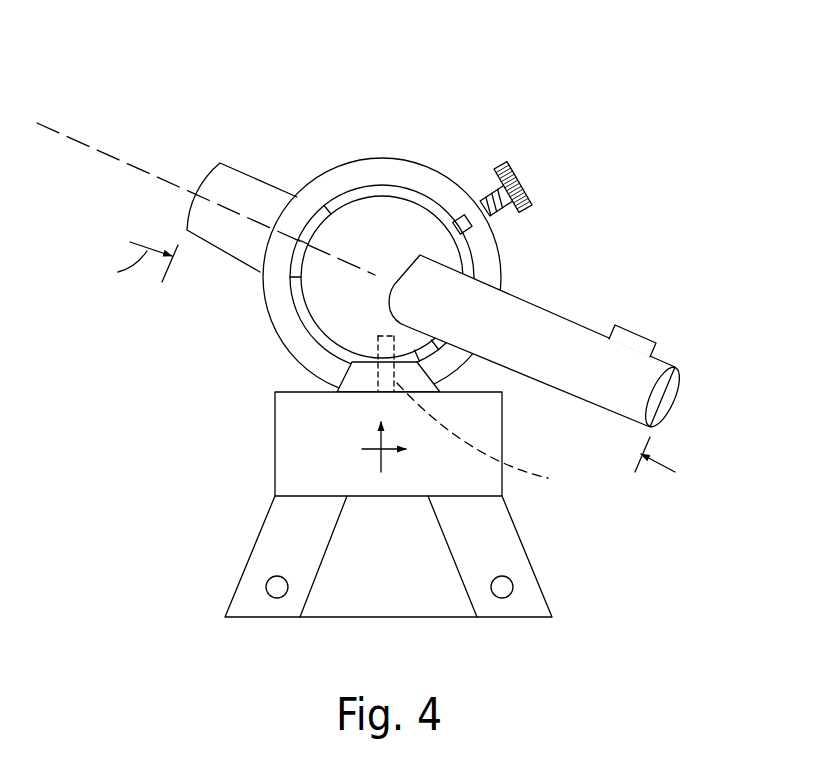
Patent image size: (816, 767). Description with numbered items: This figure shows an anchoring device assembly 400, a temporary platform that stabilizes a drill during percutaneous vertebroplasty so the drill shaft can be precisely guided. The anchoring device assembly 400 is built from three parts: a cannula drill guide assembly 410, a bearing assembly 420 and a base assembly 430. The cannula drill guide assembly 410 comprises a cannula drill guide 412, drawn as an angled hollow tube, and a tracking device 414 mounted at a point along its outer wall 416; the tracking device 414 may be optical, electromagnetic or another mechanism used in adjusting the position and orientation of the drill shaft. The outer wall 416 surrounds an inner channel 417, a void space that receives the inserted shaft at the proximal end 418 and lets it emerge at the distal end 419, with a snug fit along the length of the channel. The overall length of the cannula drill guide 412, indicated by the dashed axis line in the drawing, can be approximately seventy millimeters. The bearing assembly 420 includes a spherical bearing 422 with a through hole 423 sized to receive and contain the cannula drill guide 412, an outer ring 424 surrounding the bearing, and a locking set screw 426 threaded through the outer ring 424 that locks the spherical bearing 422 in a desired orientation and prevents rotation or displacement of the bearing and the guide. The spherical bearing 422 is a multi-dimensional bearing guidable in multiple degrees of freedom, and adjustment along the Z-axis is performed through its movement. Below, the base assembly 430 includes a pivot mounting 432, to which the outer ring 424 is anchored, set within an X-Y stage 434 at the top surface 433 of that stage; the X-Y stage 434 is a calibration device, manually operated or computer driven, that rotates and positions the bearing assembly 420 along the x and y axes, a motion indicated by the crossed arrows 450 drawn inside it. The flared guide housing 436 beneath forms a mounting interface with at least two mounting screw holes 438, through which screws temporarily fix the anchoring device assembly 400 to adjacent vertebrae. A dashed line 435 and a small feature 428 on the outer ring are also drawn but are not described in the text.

The anchoring device assembly 400 is at (322, 95).
The cannula drill guide assembly 410 is at (554, 246).
The cannula drill guide 412 is at (561, 312).
The tracking device 414 is at (641, 330).
The outer wall 416 is at (677, 370).
The inner channel 417 is at (661, 400).
The proximal end 418 is at (664, 424).
The distal end 419 is at (197, 178).
The bearing assembly 420 is at (322, 165).
The spherical bearing 422 is at (323, 285).
The through hole 423 is at (391, 286).
The outer ring 424 is at (425, 180).
The set screw 426 is at (528, 170).
The indicator 428 is at (461, 181).
The base assembly 430 is at (241, 445).
The pivot mounting 432 is at (352, 362).
The top surface 433 is at (483, 392).
The X-Y stage 434 is at (287, 458).
The dashed path 435 is at (497, 438).
The guide housing 436 is at (328, 618).
The mounting screw holes 438 is at (268, 581).
The adjustment crosshair 450 is at (393, 462).